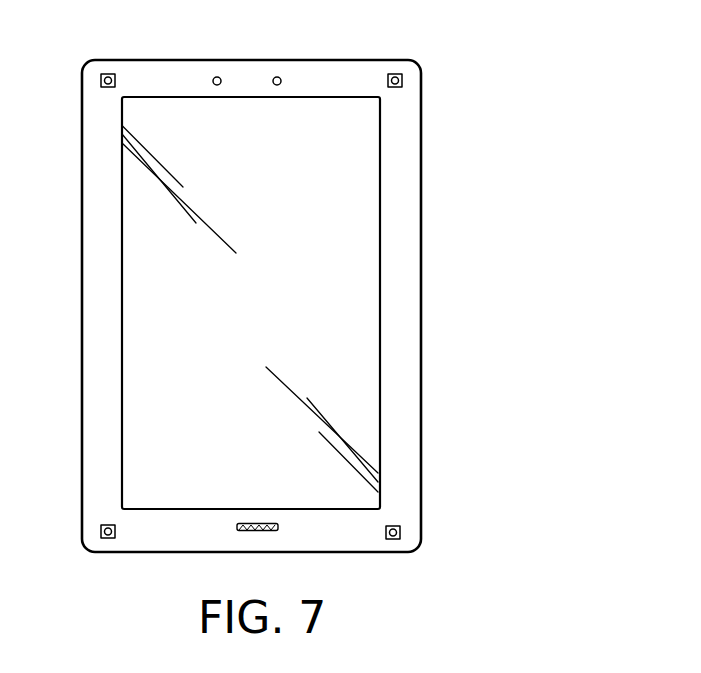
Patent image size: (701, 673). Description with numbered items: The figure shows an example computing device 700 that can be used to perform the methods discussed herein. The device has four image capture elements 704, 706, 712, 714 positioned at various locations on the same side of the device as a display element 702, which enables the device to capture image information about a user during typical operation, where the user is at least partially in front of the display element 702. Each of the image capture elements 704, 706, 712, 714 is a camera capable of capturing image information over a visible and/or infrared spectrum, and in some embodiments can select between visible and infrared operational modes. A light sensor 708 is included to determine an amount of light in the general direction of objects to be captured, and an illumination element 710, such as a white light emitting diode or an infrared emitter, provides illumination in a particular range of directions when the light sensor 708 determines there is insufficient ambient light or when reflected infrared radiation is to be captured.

The computing device 700 is at (564, 117).
The display element 702 is at (121, 108).
The image capture element 704 is at (110, 73).
The image capture element 706 is at (401, 73).
The light sensor 708 is at (280, 77).
The illumination element 710 is at (214, 77).
The image capture element 712 is at (105, 538).
The image capture element 714 is at (393, 540).